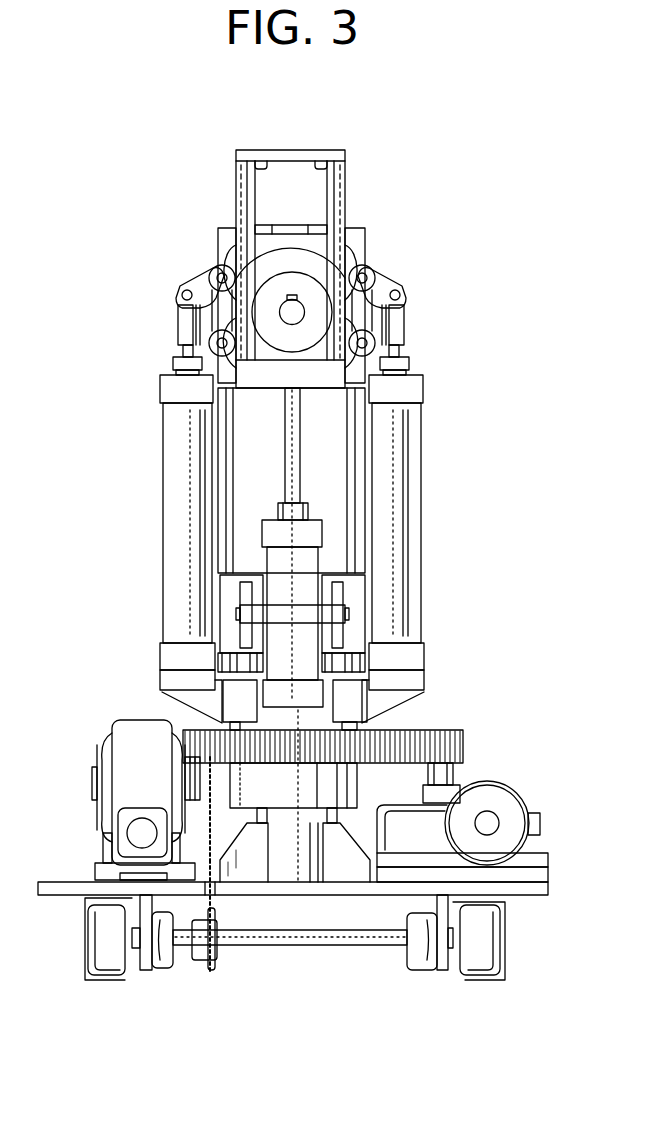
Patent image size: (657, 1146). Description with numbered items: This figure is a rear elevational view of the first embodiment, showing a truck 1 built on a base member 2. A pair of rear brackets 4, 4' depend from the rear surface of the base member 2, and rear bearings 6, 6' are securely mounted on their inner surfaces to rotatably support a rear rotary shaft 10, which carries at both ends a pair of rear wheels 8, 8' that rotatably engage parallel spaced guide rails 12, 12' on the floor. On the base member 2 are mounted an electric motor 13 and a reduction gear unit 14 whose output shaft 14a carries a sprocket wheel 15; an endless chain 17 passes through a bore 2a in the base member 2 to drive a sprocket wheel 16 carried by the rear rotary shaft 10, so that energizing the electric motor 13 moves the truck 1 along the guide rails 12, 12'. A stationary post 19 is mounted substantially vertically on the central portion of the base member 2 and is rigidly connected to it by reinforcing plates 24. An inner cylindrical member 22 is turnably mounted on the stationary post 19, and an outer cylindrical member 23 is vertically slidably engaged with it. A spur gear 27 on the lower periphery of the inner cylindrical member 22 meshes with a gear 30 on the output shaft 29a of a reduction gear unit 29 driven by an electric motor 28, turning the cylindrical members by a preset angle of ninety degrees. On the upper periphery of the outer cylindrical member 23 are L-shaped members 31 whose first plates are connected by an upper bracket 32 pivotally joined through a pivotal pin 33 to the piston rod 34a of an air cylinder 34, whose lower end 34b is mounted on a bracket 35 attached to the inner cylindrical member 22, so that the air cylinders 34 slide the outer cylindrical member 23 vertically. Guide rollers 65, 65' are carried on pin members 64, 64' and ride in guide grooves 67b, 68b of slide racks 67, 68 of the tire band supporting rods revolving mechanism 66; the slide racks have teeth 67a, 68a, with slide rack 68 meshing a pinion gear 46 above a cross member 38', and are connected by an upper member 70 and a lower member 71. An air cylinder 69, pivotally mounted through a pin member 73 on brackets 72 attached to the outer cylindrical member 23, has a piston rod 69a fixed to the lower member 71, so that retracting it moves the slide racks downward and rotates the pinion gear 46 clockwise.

The truck 1 is at (326, 950).
The base member 2 is at (60, 882).
The bore 2a is at (205, 893).
The rear bracket 4 is at (144, 954).
The rear bracket 4' is at (443, 954).
The rear bearing 6 is at (164, 962).
The rear bearing 6' is at (416, 963).
The rear wheel 8 is at (106, 961).
The rear wheel 8' is at (480, 964).
The rear rotary shaft 10 is at (275, 947).
The guide rail 12 is at (87, 939).
The guide rail 12' is at (509, 941).
The electric motor 13 is at (112, 840).
The reduction gear unit 14 is at (120, 726).
The output shaft 14a is at (188, 780).
The sprocket wheel 15 is at (208, 807).
The sprocket wheel 16 is at (208, 972).
The endless chain 17 is at (212, 842).
The stationary post 19 is at (292, 882).
The inner cylindrical member 22 is at (358, 790).
The outer cylindrical member 23 is at (362, 530).
The reinforcing plate 24 is at (242, 882).
The spur gear 27 is at (385, 737).
The electric motor 28 is at (515, 805).
The reduction gear unit 29 is at (383, 840).
The output shaft 29a is at (455, 777).
The gear 30 is at (462, 740).
The L-shaped member 31 is at (226, 228).
The upper bracket 32 is at (182, 287).
The pivotal pin 33 is at (182, 297).
The air cylinder 34 is at (175, 482).
The piston rod 34a is at (178, 330).
The cylinder end cap 34b is at (162, 655).
The bracket 35 is at (175, 692).
The cross member 38' is at (291, 207).
The pinion gear 46 is at (291, 273).
The pin member 64 is at (226, 322).
The pin member 64' is at (368, 320).
The guide roller 65 is at (182, 300).
The guide roller 65' is at (408, 300).
The tire band supporting rods revolving mechanism 66 is at (272, 425).
The slide rack 67 is at (241, 161).
The teeth 67a is at (260, 161).
The guide groove 67b is at (238, 172).
The slide rack 68 is at (340, 190).
The teeth 68a is at (322, 161).
The guide groove 68b is at (348, 172).
The air cylinder 69 is at (272, 563).
The piston rod 69a is at (300, 478).
The upper member 70 is at (338, 150).
The lower member 71 is at (280, 388).
The bracket 72 is at (358, 634).
The pin member 73 is at (354, 612).